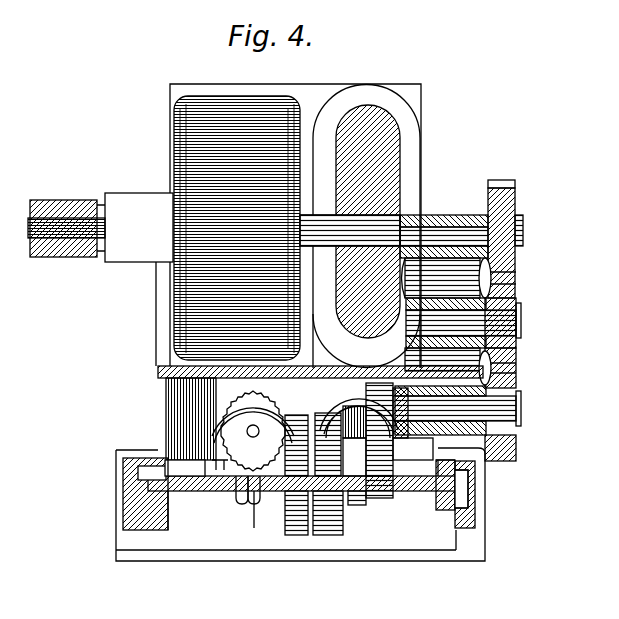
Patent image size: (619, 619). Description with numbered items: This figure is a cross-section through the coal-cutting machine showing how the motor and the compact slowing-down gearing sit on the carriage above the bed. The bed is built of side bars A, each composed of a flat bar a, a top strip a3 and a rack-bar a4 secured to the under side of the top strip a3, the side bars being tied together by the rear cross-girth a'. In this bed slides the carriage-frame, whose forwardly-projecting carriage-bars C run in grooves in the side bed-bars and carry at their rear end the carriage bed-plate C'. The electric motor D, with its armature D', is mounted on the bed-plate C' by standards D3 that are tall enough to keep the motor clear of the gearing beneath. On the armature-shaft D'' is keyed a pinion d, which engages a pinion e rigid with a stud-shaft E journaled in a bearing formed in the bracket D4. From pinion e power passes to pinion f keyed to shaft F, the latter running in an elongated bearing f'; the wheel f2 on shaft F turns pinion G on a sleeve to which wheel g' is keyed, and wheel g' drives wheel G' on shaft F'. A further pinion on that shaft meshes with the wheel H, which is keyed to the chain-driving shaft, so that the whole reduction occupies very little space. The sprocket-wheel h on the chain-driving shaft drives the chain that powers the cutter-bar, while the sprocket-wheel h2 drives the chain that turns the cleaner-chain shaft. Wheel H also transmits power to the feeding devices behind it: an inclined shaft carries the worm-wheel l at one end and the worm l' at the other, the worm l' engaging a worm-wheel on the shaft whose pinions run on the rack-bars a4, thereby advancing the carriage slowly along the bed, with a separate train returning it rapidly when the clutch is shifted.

The electric motor D is at (377, 226).
The armature D' is at (237, 228).
The armature-shaft D'' is at (411, 236).
The standards D3 is at (177, 400).
The bracket D4 is at (470, 262).
The pinion d is at (507, 187).
The pinion e is at (483, 280).
The stud-shaft E is at (472, 323).
The pinion f is at (469, 366).
The shaft F is at (466, 410).
The shaft F' is at (307, 512).
The elongated bearing f' is at (413, 424).
The wheel f2 is at (356, 434).
The worm-wheel l is at (253, 431).
The worm l' is at (254, 425).
The wheel g' is at (287, 469).
The pinion G is at (339, 459).
The wheel G' is at (350, 532).
The wheel H is at (296, 520).
The sprocket-wheel h is at (254, 505).
The sprocket-wheel h2 is at (230, 504).
The side bars A is at (115, 498).
The flat bars a is at (488, 489).
The rear cross-girth a' is at (421, 496).
The top strips a3 is at (438, 460).
The rack-bars a4 is at (462, 466).
The carriage-bars C is at (106, 362).
The carriage bed-plate C' is at (308, 500).